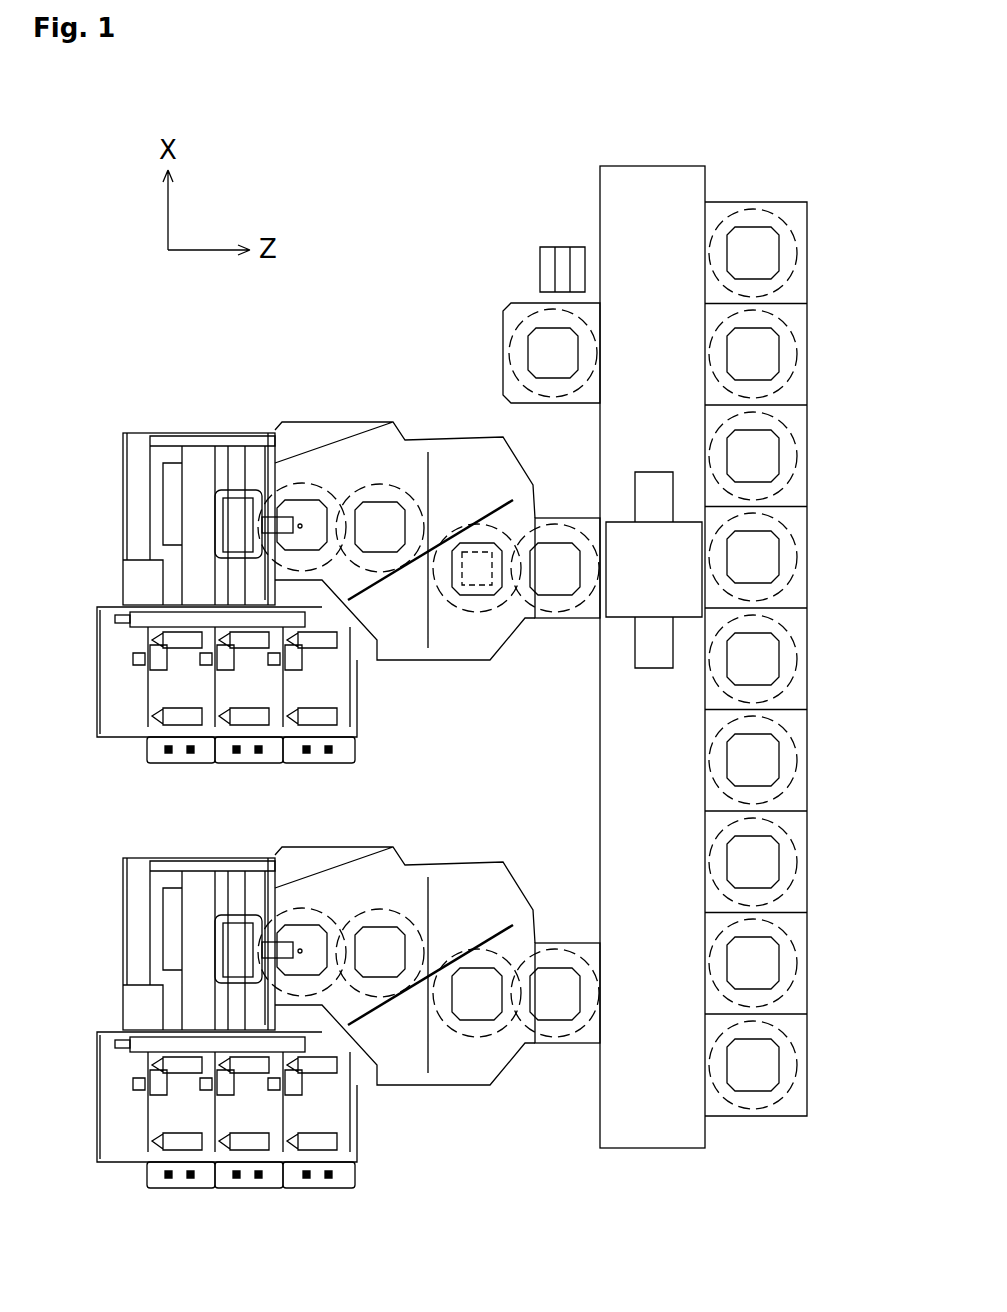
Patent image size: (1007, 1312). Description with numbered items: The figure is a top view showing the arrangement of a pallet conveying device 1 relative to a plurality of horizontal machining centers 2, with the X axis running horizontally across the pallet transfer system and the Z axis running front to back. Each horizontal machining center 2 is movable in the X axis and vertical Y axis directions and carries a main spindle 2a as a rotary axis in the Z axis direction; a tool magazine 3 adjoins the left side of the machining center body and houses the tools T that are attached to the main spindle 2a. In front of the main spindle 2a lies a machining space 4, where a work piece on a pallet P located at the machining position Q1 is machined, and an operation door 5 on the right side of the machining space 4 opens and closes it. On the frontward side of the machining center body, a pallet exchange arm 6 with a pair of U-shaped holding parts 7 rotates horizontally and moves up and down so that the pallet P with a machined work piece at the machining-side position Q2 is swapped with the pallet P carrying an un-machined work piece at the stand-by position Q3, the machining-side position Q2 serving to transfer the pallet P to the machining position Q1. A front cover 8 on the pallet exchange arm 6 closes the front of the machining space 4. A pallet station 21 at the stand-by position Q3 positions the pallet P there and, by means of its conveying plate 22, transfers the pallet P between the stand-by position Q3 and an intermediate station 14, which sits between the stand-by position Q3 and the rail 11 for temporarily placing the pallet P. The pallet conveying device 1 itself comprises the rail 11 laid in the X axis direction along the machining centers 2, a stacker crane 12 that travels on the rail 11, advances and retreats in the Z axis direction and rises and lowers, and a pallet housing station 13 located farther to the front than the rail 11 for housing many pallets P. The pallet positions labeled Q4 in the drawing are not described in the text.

The pallet conveying device 1 is at (766, 134).
The horizontal machining center 2 is at (137, 455).
The main spindle 2a is at (291, 470).
The tool magazine 3 is at (115, 703).
The machining space 4 is at (345, 473).
The operation door 5 is at (318, 455).
The pallet exchange arm 6 is at (430, 455).
The holding part 7 is at (478, 537).
The front cover 8 is at (428, 600).
The rail 11 is at (640, 187).
The stacker crane 12 is at (654, 598).
The pallet housing station 13 is at (808, 205).
The intermediate station 14 is at (583, 620).
The pallet station 21 is at (514, 603).
The conveying plate 22 is at (472, 617).
The pallet P is at (770, 253).
The tool T is at (183, 650).
The machining position Q1 is at (275, 422).
The machining-side position Q2 is at (372, 463).
The stand-by position Q3 is at (487, 620).
The position Q4 is at (547, 613).